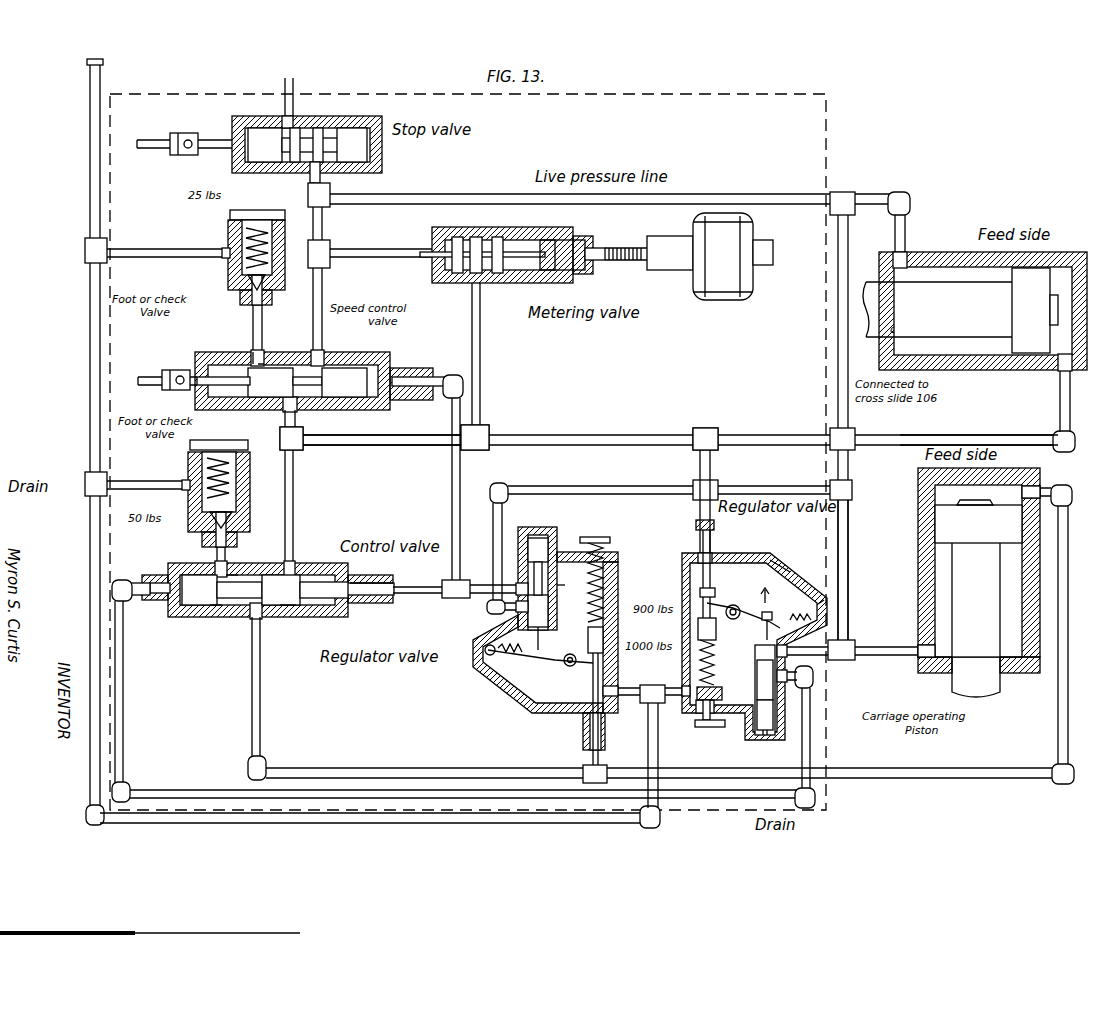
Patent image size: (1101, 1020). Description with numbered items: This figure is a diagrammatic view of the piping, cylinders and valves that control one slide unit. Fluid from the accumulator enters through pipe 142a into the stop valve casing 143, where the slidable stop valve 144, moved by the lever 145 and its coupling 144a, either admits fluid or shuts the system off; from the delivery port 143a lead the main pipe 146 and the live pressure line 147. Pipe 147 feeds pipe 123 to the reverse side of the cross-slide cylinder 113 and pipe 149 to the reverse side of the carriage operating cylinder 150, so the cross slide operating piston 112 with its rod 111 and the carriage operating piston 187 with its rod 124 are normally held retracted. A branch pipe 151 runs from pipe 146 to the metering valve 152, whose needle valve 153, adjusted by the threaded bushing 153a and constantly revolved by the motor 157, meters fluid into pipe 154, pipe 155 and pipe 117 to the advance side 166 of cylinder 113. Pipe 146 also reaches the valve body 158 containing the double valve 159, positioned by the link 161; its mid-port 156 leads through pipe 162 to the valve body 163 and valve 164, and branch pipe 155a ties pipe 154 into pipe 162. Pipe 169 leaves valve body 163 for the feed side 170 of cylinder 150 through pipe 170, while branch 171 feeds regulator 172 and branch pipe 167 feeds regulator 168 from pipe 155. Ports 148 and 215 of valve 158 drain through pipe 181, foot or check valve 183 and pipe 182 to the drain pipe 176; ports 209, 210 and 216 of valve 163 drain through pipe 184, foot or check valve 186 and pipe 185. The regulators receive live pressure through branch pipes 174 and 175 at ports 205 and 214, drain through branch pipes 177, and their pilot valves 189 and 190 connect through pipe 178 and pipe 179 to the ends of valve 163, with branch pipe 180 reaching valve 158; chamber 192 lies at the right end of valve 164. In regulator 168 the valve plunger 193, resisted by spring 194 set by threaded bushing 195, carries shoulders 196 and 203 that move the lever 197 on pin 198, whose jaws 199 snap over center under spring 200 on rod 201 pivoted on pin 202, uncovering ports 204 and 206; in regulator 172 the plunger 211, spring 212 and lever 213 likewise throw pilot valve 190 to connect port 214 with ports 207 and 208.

The cross slide piston rod 111 is at (868, 290).
The cross slide operating piston 112 is at (1012, 293).
The cross-slide cylinder 113 is at (965, 370).
The pipe 117 is at (1056, 412).
The pipe 123 is at (906, 240).
The carriage piston rod 124 is at (945, 702).
The pipe 142a is at (285, 82).
The stop valve casing 143 is at (345, 116).
The delivery port 143a is at (308, 175).
The stop valve 144 is at (307, 145).
The coupling 144a is at (208, 152).
The lever 145 is at (145, 140).
The main pipe 146 is at (324, 226).
The live pressure line 147 is at (475, 184).
The port 148 is at (323, 350).
The pipe 149 is at (893, 656).
The carriage operating cylinder 150 is at (850, 574).
The branch pipe 151 is at (355, 258).
The metering valve 152 is at (528, 283).
The needle valve 153 is at (472, 240).
The threaded bushing 153a is at (562, 240).
The pipe 154 is at (476, 360).
The pipe 155 is at (590, 434).
The branch pipe 155a is at (372, 440).
The mid-port 156 is at (283, 412).
The motor 157 is at (722, 300).
The valve body 158 is at (355, 364).
The double valve 159 is at (282, 382).
The link 161 is at (155, 386).
The pipe 162 is at (294, 500).
The valve body 163 is at (325, 563).
The valve 164 is at (265, 590).
The advance side 166 is at (1060, 362).
The branch pipe 167 is at (700, 462).
The regulator 168 is at (760, 553).
The pipe 169 is at (261, 722).
The feed side 170 is at (1022, 495).
The branch 171 is at (600, 753).
The regulator 172 is at (500, 675).
The branch pipe 174 is at (852, 640).
The branch pipe 175 is at (604, 487).
The drain pipe 176 is at (90, 460).
The branch pipe 177 is at (634, 686).
The pipe 178 is at (822, 740).
The pipe 179 is at (425, 594).
The branch pipe 180 is at (452, 516).
The pipe 181 is at (253, 328).
The pipe 182 is at (150, 250).
The foot or check valve 183 is at (228, 279).
The pipe 184 is at (215, 548).
The pipe 185 is at (140, 482).
The foot or check valve 186 is at (190, 500).
The carriage operating piston 187 is at (979, 570).
The pilot valve 189 is at (765, 735).
The pilot valve 190 is at (538, 538).
The chamber 192 is at (378, 603).
The valve plunger 193 is at (700, 568).
The spring 194 is at (698, 642).
The threaded bushing 195 is at (700, 727).
The shoulder 196 is at (712, 588).
The lever 197 is at (725, 606).
The pin 198 is at (726, 614).
The jaws 199 is at (775, 560).
The spring 200 is at (800, 580).
The rod 201 is at (774, 616).
The pin 202 is at (812, 600).
The shoulder 203 is at (606, 625).
The port 204 is at (787, 700).
The port 205 is at (790, 660).
The port 206 is at (709, 660).
The port 207 is at (557, 590).
The port 208 is at (590, 545).
The port 209 is at (290, 617).
The port 210 is at (232, 563).
The plunger 211 is at (593, 693).
The spring 212 is at (605, 580).
The lever 213 is at (538, 655).
The port 214 is at (570, 654).
The port 215 is at (266, 352).
The port 216 is at (225, 617).